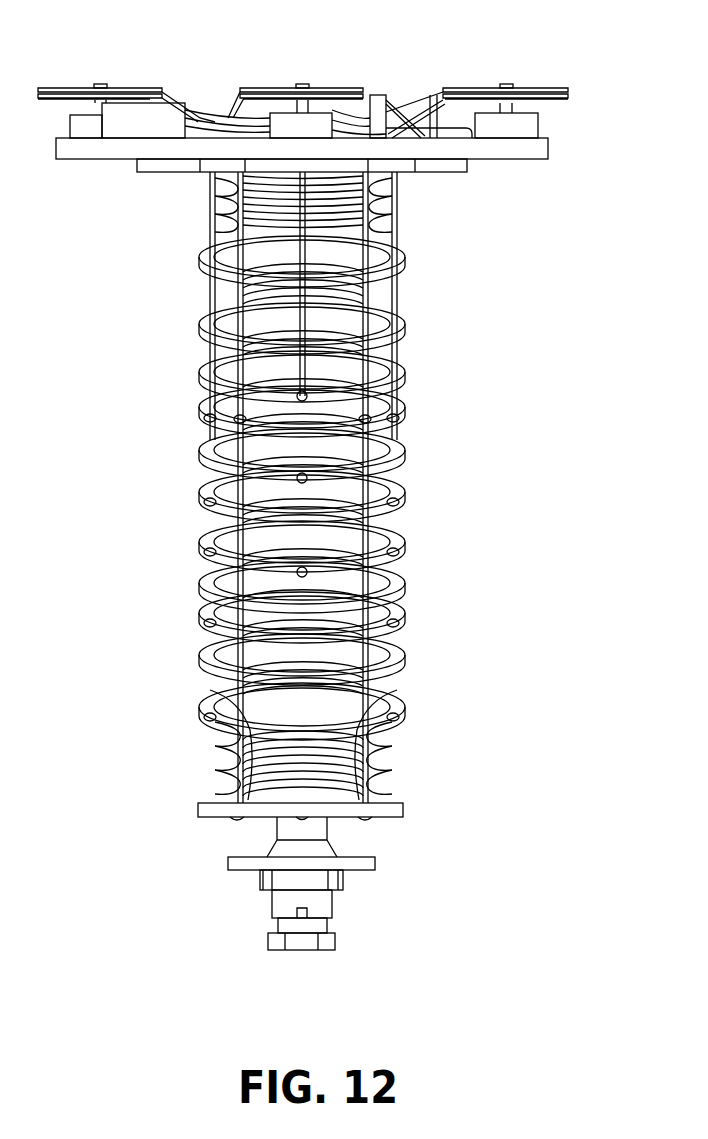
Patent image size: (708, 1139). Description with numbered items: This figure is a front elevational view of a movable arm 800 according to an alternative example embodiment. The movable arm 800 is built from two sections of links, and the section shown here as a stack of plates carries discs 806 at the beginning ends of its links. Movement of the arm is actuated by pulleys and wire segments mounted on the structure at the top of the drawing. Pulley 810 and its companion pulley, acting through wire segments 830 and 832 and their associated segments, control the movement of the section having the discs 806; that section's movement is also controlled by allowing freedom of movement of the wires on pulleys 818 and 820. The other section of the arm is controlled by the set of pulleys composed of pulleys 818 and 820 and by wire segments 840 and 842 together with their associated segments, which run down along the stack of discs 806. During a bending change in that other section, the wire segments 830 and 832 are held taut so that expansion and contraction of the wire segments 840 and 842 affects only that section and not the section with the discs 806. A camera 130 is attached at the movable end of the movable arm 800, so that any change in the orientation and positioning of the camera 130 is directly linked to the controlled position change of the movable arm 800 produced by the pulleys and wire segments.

The movable arm 800 is at (326, 475).
The pulley 820 is at (134, 88).
The pulley 818 is at (330, 88).
The pulley 810 is at (548, 88).
The wire segment 832 is at (210, 212).
The wire segment 830 is at (397, 198).
The discs 806 is at (205, 416).
The wire segment 842 is at (236, 466).
The wire segment 840 is at (370, 467).
The camera 130 is at (320, 901).